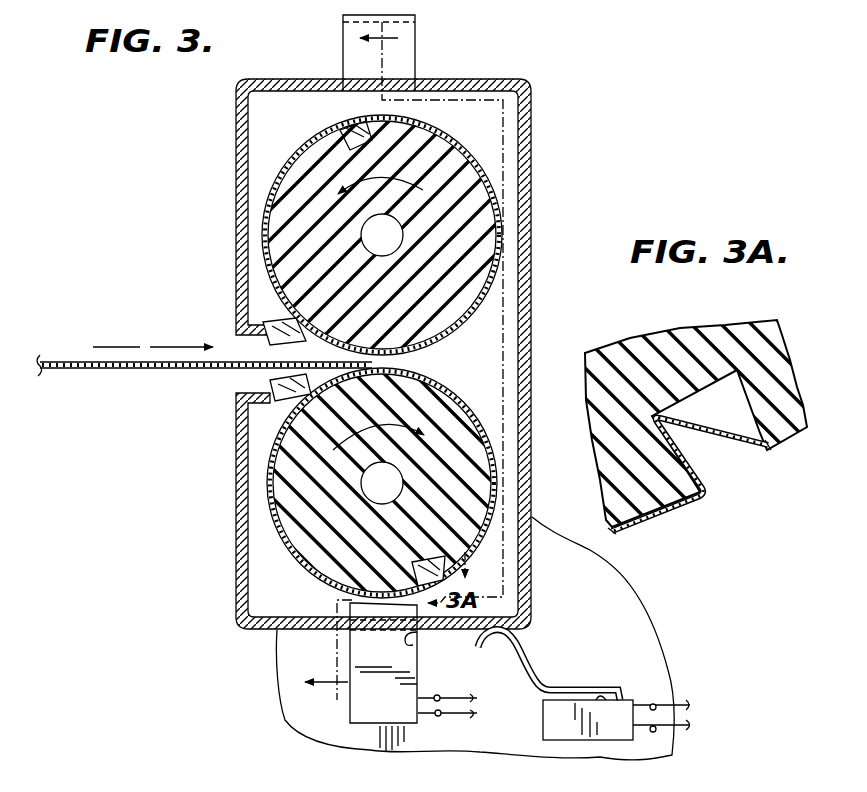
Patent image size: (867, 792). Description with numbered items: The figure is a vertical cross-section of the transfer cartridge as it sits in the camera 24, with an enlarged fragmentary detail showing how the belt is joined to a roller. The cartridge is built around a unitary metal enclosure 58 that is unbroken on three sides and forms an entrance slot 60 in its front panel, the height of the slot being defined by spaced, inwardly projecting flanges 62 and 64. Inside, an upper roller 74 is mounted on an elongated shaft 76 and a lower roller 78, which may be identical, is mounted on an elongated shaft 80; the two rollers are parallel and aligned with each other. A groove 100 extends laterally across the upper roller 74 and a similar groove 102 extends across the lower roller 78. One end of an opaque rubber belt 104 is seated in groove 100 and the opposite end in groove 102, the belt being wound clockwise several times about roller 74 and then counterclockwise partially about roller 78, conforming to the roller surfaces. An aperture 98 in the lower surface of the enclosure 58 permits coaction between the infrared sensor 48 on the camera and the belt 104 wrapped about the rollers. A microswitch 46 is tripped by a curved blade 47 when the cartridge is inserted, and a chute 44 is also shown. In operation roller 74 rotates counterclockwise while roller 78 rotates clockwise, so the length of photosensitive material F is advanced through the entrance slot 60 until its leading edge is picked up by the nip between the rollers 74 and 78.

In FIG. 3, the camera 24 is at (510, 729).
In FIG. 3, the upper tape guide chute 44 is at (404, 63).
In FIG. 3, the microswitch 46 is at (620, 708).
In FIG. 3, the curved blade 47 is at (538, 656).
In FIG. 3, the infrared sensor 48 is at (410, 681).
In FIG. 3, the enclosure 58 is at (530, 313).
In FIG. 3, the entrance slot 60 is at (247, 338).
In FIG. 3, the flange 62 is at (288, 318).
In FIG. 3, the flange 64 is at (283, 398).
In FIG. 3, the upper roller 74 is at (493, 217).
In FIG. 3, the shaft 76 is at (400, 250).
In FIG. 3, the lower roller 78 is at (318, 568).
In FIG. 3, the shaft 80 is at (400, 483).
In FIG. 3, the aperture 98 is at (408, 630).
In FIG. 3, the groove 100 is at (360, 150).
In FIG. 3, the groove 102 is at (433, 560).
In FIG. 3A, the groove 102 is at (742, 380).
In FIG. 3, the opaque rubber belt 104 is at (417, 348).
In FIG. 3A, the opaque rubber belt 104 is at (668, 520).
In FIG. 3, the photosensitive material F is at (122, 370).